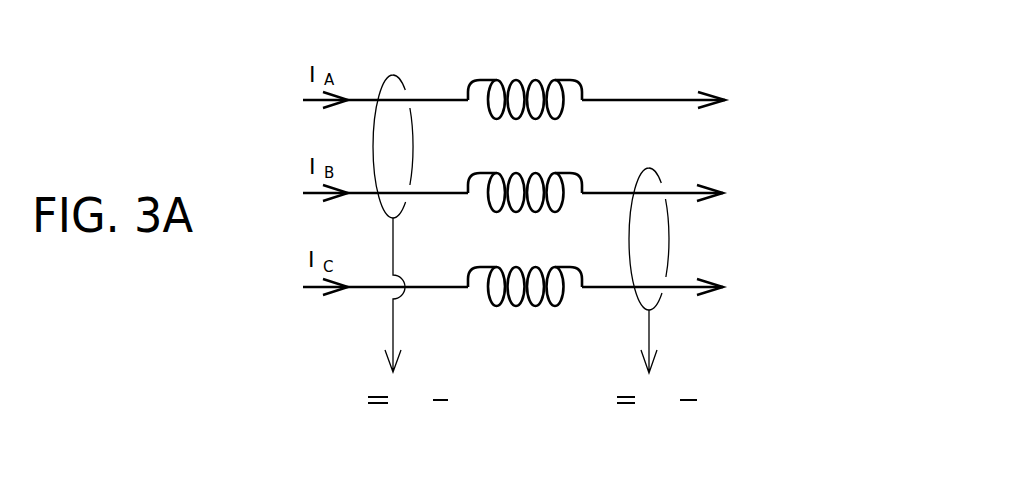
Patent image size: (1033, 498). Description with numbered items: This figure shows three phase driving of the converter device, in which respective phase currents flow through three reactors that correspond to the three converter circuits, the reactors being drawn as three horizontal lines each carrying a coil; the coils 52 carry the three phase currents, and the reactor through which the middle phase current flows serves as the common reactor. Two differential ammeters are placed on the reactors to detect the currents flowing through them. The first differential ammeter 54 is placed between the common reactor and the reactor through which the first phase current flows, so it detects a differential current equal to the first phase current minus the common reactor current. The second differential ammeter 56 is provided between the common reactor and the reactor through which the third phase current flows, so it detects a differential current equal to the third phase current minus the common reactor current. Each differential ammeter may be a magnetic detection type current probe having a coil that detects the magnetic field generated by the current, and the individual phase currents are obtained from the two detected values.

The three-phase reactor coils (numeral inferred; not printed on this sheet) 52 is at (566, 262).
The first differential ammeter 54 is at (394, 77).
The second differential ammeter 56 is at (652, 171).